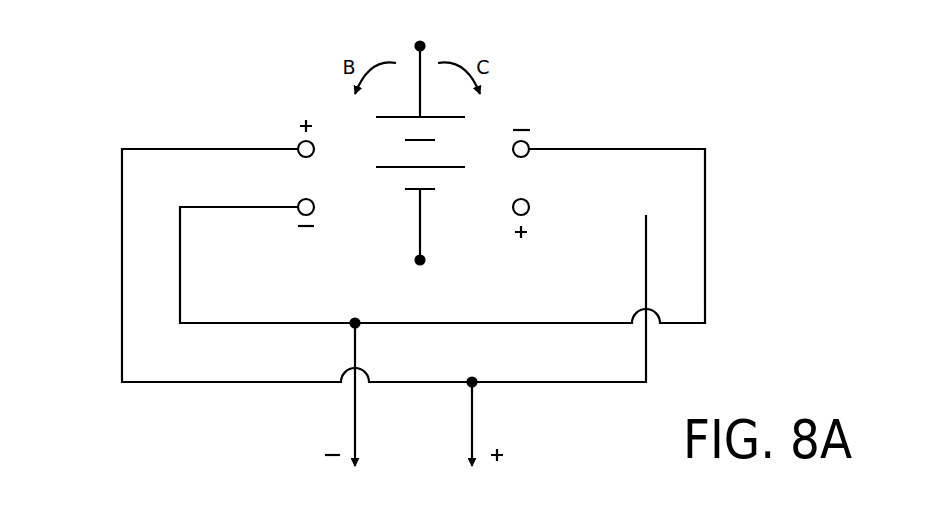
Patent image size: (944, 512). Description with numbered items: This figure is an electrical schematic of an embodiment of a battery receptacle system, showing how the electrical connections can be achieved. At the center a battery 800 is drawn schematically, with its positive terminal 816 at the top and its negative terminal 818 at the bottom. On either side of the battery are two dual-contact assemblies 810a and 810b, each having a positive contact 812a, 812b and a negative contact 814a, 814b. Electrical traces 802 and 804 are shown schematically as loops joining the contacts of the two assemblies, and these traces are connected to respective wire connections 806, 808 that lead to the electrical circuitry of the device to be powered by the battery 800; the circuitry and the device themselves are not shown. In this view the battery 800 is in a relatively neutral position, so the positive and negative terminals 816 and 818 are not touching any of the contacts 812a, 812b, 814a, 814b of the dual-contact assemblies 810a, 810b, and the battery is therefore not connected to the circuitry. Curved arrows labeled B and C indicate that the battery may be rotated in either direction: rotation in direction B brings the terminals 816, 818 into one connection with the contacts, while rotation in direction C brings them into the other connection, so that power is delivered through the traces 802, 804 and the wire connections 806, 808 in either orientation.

The battery 800 is at (403, 168).
The electrical trace 802 is at (121, 320).
The electrical trace 804 is at (705, 238).
The wire connection 806 is at (474, 418).
The wire connection 808 is at (352, 416).
The dual-contact assembly 810a is at (272, 84).
The dual-contact assembly 810b is at (542, 98).
The positive contact 812a is at (300, 144).
The positive contact 812b is at (527, 212).
The negative contact 814a is at (303, 212).
The negative contact 814b is at (526, 142).
The positive terminal 816 is at (424, 44).
The negative terminal 818 is at (426, 260).